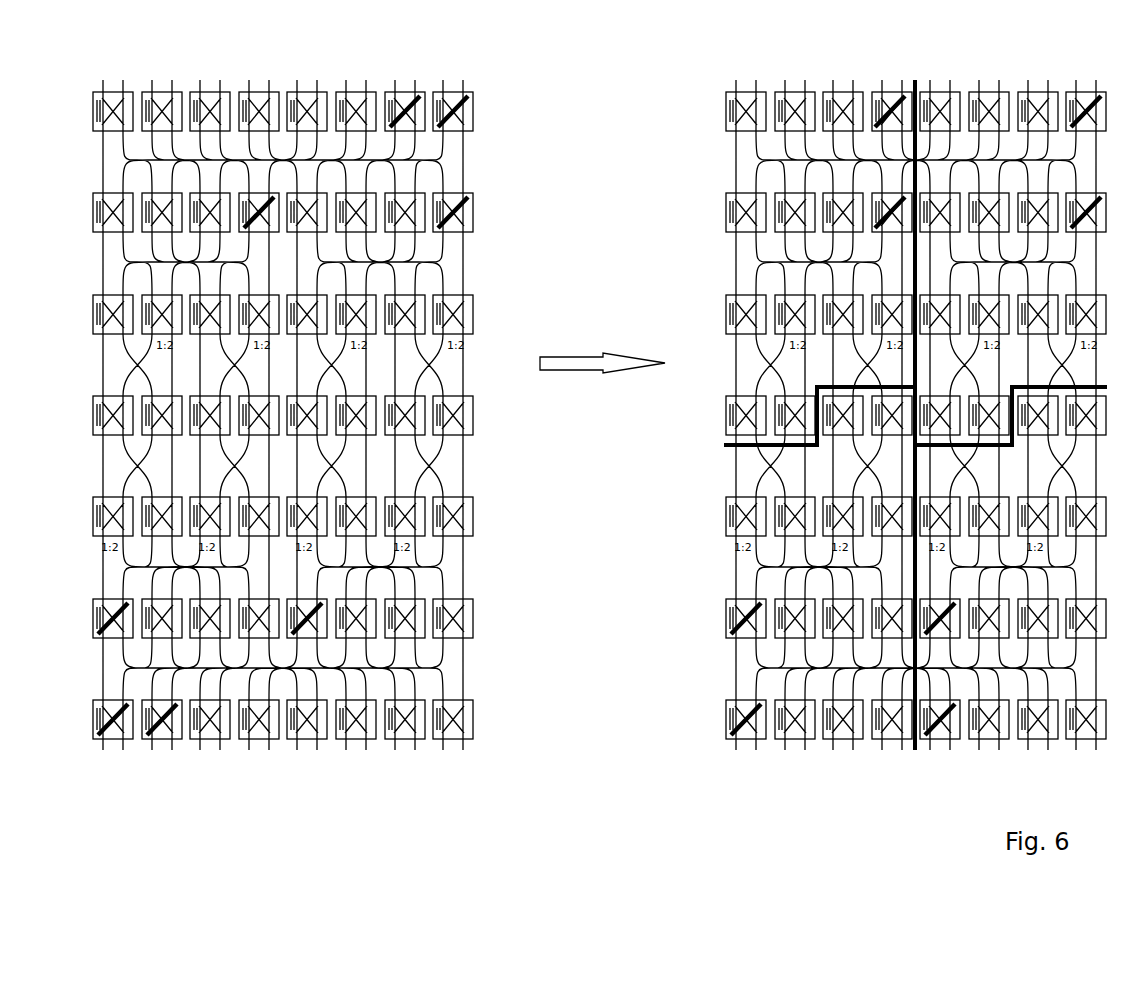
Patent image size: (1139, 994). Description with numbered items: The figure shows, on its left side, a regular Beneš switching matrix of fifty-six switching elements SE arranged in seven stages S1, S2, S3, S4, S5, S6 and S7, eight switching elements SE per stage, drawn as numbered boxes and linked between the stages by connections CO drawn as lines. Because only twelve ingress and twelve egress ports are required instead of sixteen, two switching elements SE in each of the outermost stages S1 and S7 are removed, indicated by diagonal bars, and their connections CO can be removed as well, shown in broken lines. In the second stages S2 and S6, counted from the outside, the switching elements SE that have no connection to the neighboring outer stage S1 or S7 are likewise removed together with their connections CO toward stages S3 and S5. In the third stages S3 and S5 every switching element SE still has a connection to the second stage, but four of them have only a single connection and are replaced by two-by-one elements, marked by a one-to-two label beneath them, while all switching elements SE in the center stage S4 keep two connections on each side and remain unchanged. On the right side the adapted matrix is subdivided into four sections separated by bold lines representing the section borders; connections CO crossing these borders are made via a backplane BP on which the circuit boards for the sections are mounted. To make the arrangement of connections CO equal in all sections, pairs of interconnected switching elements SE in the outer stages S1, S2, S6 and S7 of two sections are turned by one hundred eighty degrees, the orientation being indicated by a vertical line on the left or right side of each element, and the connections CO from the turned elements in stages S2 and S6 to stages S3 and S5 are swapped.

The switching element SE is at (728, 220).
The connection CO is at (590, 397).
The backplane BP is at (723, 445).
The uppermost stage S1 is at (599, 111).
The second stage from the top S2 is at (599, 212).
The third stage S3 is at (599, 314).
The center stage S4 is at (599, 415).
The third stage from the bottom S5 is at (599, 516).
The second stage from the bottom S6 is at (599, 618).
The lowermost stage S7 is at (475, 793).